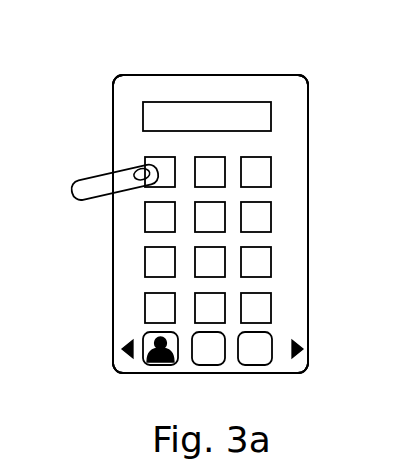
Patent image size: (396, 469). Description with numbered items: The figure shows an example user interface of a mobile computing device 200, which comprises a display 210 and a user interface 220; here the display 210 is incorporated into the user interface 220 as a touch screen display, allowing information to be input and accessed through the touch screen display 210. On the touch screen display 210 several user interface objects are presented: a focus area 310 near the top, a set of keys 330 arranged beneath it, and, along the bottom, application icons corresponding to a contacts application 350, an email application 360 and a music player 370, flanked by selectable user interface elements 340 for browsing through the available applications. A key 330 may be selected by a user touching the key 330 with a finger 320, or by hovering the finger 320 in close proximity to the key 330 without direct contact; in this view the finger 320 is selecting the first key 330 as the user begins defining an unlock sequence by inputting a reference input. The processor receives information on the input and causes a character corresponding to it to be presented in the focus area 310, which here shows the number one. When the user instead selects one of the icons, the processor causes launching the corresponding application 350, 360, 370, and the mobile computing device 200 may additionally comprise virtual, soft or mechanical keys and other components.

The mobile computing device 200 is at (322, 74).
The display 210 is at (113, 117).
The user interface 220 is at (113, 117).
The focus area 310 is at (266, 121).
The finger 320 is at (73, 203).
The key 330 is at (145, 272).
The selectable user interface elements 340 is at (122, 349).
The contacts application 350 is at (141, 363).
The email application 360 is at (195, 363).
The music player 370 is at (272, 360).